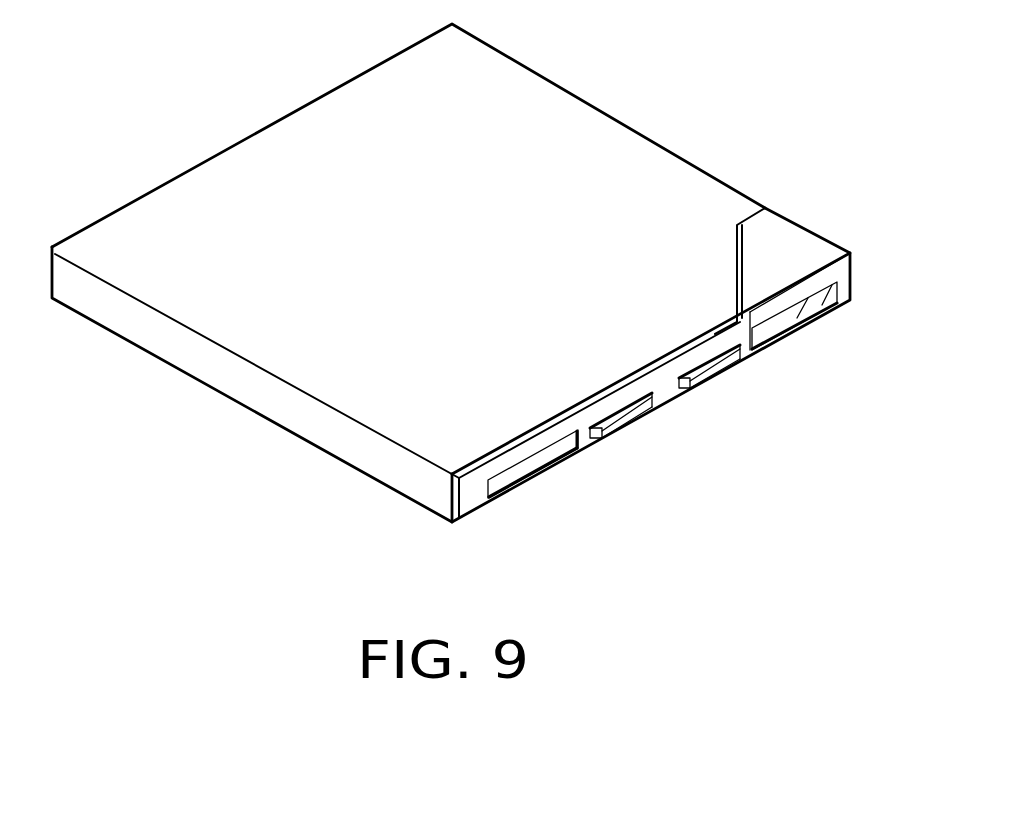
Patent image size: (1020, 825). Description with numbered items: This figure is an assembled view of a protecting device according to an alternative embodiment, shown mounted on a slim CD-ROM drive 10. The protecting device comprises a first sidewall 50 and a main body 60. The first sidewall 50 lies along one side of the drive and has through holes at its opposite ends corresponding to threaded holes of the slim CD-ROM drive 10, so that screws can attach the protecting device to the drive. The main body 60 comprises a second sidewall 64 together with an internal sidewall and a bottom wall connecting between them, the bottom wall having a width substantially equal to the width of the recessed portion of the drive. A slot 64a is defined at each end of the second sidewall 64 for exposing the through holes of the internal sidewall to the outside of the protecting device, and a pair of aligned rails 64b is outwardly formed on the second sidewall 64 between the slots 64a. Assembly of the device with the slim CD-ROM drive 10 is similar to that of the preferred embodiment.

The slim CD-ROM drive 10 is at (481, 286).
The first sidewall 50 is at (342, 83).
The main body 60 is at (836, 223).
The second sidewall 64 is at (662, 393).
The slot 64a is at (558, 450).
The aligned rails 64b is at (717, 370).